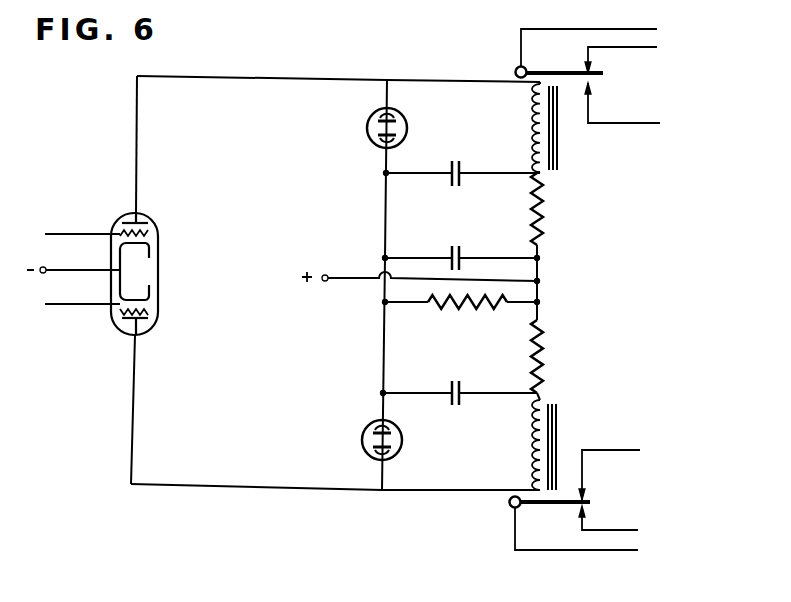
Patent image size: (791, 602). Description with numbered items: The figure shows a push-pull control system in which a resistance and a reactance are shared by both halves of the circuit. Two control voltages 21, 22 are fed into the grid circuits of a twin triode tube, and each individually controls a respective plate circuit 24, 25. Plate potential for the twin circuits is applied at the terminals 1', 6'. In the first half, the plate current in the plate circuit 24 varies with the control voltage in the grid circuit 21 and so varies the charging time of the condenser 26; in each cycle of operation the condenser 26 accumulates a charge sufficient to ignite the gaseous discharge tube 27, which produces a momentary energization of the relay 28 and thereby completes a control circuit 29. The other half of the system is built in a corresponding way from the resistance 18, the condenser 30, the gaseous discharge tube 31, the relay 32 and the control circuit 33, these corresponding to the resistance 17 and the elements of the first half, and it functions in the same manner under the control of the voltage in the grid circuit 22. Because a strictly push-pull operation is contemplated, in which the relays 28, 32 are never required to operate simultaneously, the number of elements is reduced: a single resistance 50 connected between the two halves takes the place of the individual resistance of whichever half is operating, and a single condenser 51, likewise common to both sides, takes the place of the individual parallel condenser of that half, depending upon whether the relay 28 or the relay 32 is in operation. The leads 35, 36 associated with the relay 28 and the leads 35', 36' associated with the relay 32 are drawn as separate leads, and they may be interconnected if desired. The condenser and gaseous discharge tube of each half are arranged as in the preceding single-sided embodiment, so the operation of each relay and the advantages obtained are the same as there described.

The plate potential terminal 1' is at (421, 288).
The plate potential terminal 6' is at (88, 271).
The resistance 17 is at (546, 237).
The resistance 18 is at (546, 366).
The control voltage grid circuit 21 is at (89, 233).
The control voltage grid circuit 22 is at (93, 301).
The plate circuit 24 is at (137, 172).
The plate circuit 25 is at (132, 408).
The condenser 26 is at (462, 170).
The gaseous discharge tube 27 is at (407, 122).
The relay 28 is at (560, 147).
The control circuit 29 is at (643, 108).
The condenser 30 is at (468, 376).
The gaseous discharge tube 31 is at (413, 434).
The relay 32 is at (557, 420).
The control circuit 33 is at (620, 450).
The lead 35 is at (594, 42).
The lead 35' is at (574, 524).
The lead 36 is at (600, 60).
The lead 36' is at (608, 519).
The resistance 50 is at (490, 305).
The condenser 51 is at (467, 240).